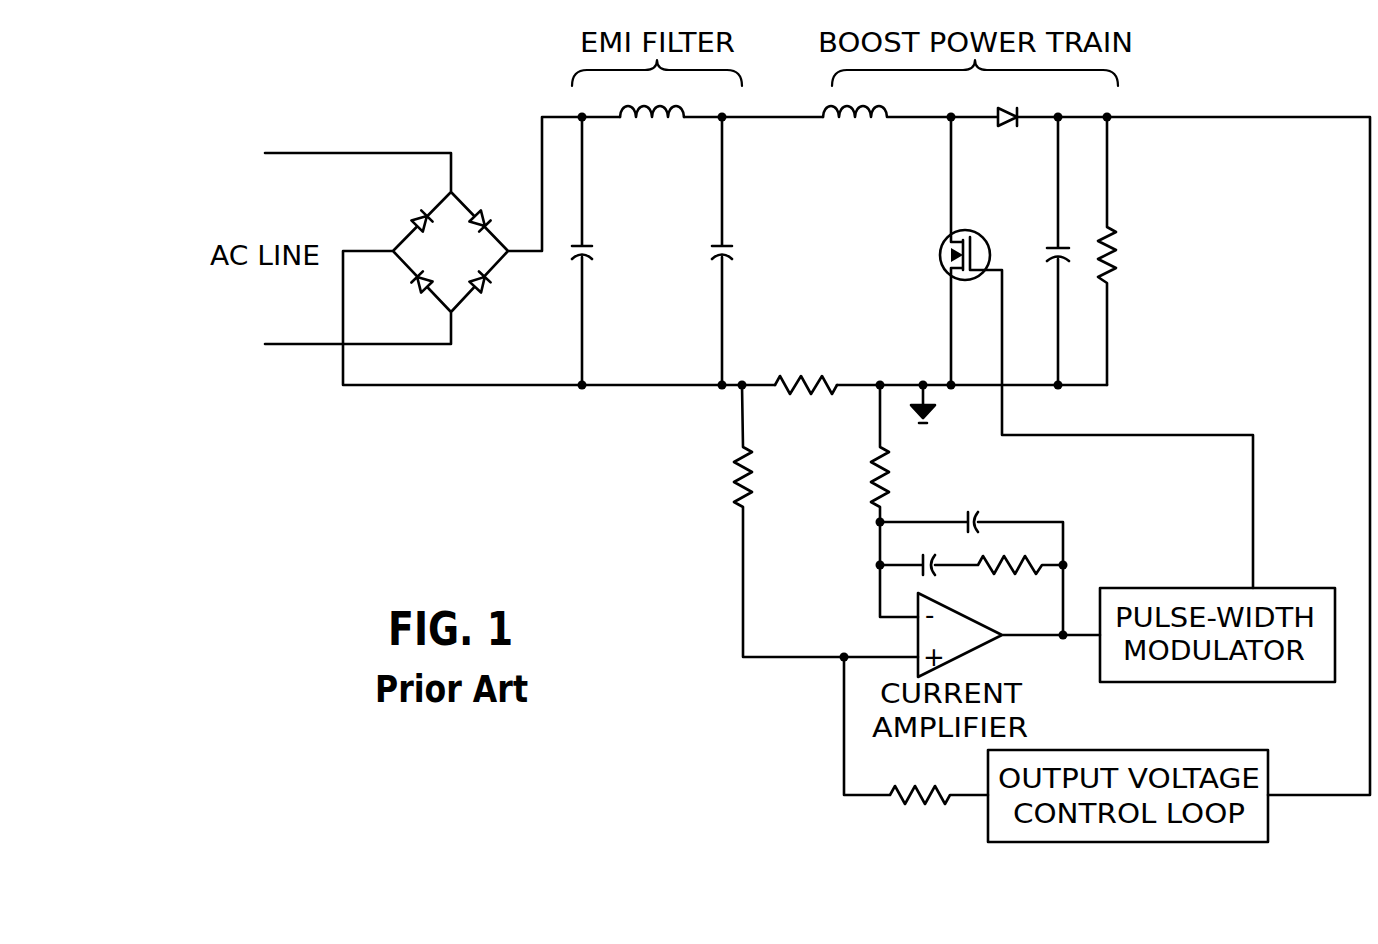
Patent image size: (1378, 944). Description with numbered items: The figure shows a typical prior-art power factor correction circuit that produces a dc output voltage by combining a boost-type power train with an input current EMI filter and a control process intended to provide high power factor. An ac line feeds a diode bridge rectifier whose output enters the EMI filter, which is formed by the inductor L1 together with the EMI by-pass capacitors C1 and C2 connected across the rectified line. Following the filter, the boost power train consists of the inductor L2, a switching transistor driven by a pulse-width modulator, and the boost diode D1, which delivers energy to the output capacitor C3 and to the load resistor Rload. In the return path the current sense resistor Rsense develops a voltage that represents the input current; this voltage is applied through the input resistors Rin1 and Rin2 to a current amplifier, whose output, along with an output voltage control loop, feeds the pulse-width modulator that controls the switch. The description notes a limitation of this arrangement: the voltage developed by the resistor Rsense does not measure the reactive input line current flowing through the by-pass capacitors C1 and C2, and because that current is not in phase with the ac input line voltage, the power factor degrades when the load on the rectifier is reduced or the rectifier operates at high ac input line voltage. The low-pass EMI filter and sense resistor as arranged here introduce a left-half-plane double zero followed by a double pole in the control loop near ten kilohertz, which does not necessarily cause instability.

The EMI filter inductor L1 is at (652, 95).
The boost inductor L2 is at (855, 95).
The boost diode D1 is at (1011, 99).
The EMI by-pass capacitor C1 is at (604, 251).
The EMI by-pass capacitor C2 is at (744, 251).
The output capacitor C3 is at (1038, 251).
The load resistor Rload is at (1144, 251).
The current sense resistor Rsense is at (801, 364).
The current amplifier input resistor Rin1 is at (916, 501).
The current amplifier input resistor Rin2 is at (788, 521).